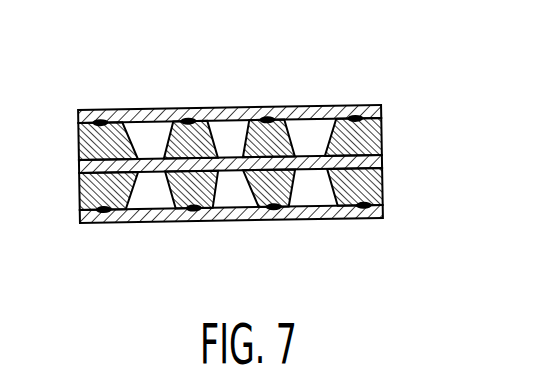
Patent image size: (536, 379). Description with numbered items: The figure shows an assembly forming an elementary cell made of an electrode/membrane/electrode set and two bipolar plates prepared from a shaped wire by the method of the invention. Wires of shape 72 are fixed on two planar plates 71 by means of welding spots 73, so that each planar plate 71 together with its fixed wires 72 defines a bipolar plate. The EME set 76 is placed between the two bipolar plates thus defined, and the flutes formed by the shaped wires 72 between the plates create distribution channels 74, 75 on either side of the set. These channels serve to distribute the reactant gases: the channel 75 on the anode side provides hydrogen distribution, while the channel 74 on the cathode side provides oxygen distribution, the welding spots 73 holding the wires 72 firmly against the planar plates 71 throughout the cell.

The planar plate 71 is at (86, 115).
The wire of shape 72 is at (241, 147).
The welding spot 73 is at (275, 117).
The distribution channel 74 is at (238, 135).
The distribution channel 75 is at (147, 195).
The EME set 76 is at (343, 162).